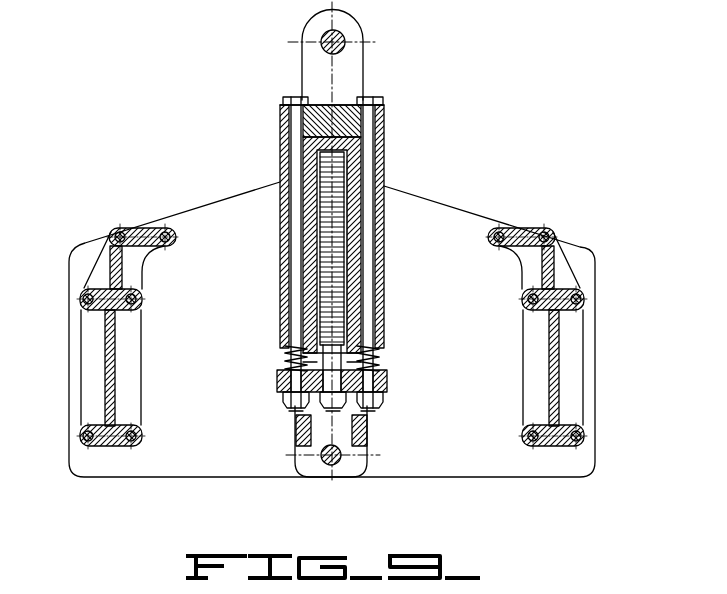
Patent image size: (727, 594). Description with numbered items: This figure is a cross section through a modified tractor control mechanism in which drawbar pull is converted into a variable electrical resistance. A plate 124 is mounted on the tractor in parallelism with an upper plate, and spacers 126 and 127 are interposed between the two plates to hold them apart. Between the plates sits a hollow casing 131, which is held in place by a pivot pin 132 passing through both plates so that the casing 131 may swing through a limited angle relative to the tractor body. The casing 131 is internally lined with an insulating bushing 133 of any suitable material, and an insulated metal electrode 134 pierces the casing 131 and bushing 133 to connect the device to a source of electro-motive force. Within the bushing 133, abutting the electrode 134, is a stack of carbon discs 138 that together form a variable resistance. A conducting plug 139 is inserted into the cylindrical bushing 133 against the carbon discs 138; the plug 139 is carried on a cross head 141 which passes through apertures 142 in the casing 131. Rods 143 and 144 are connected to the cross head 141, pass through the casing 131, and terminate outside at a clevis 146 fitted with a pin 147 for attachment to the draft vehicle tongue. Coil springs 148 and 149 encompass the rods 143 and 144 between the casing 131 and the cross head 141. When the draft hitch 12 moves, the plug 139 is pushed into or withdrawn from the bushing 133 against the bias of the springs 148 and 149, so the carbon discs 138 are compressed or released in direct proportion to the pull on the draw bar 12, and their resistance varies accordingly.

The draft hitch 12 is at (257, 171).
The plate 124 is at (450, 470).
The spacer 126 is at (90, 373).
The spacer 127 is at (563, 376).
The casing 131 is at (384, 290).
The pivot pin 132 is at (318, 456).
The insulating bushing 133 is at (340, 258).
The insulated metal electrode 134 is at (330, 160).
The carbon discs 138 is at (333, 208).
The conducting plug 139 is at (303, 363).
The cross head 141 is at (387, 377).
The apertures 142 is at (297, 413).
The rod 143 is at (289, 229).
The rod 144 is at (367, 229).
The clevis 146 is at (352, 65).
The pin 147 is at (340, 38).
The coil spring 148 is at (285, 352).
The coil spring 149 is at (379, 352).